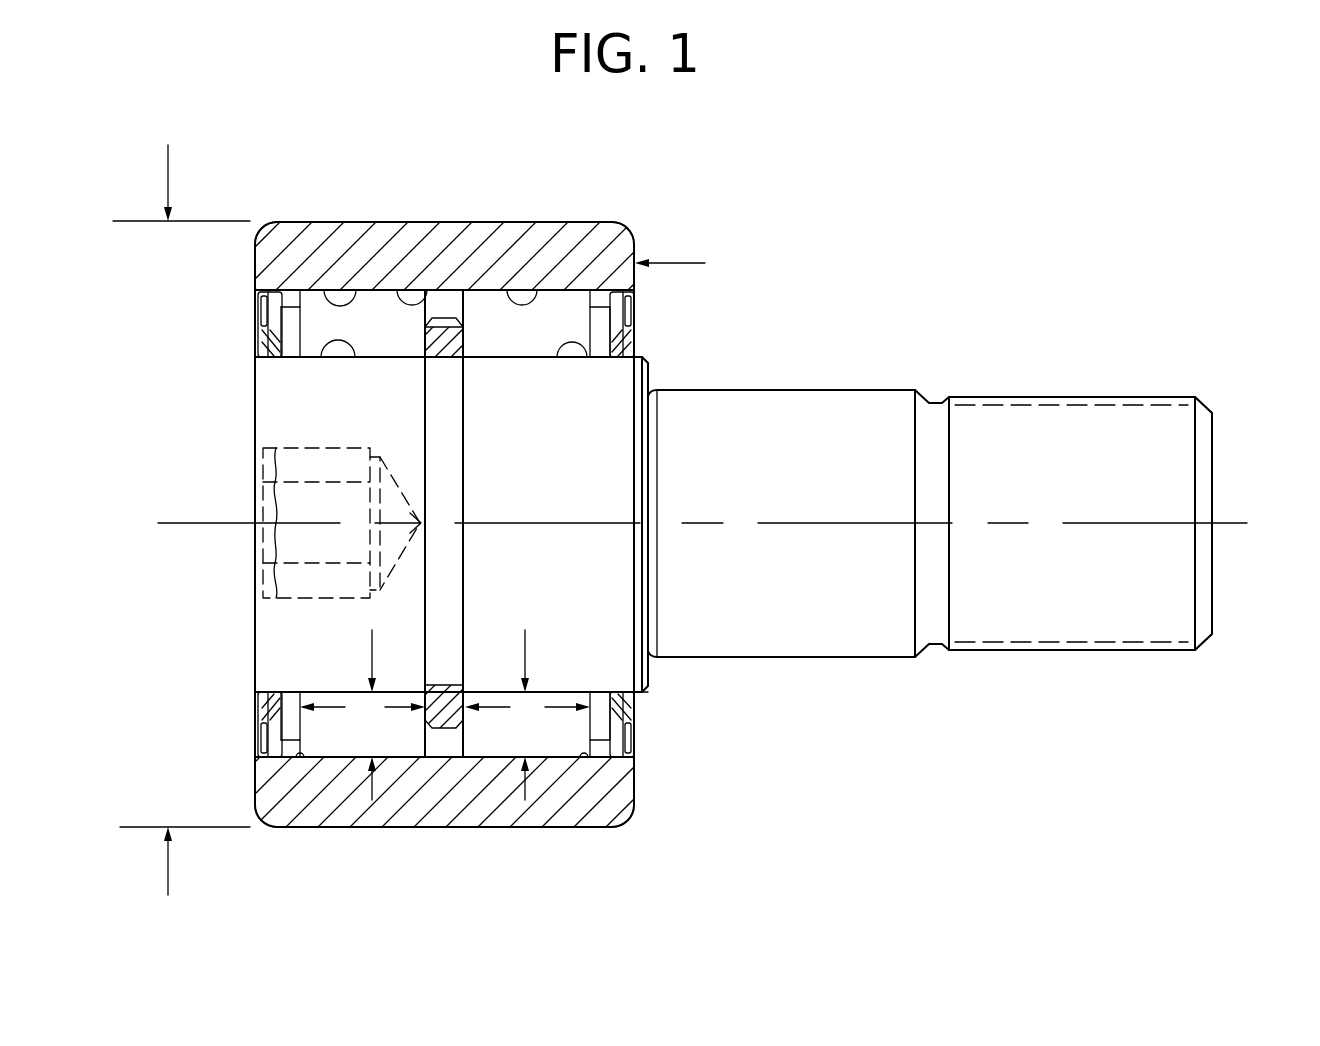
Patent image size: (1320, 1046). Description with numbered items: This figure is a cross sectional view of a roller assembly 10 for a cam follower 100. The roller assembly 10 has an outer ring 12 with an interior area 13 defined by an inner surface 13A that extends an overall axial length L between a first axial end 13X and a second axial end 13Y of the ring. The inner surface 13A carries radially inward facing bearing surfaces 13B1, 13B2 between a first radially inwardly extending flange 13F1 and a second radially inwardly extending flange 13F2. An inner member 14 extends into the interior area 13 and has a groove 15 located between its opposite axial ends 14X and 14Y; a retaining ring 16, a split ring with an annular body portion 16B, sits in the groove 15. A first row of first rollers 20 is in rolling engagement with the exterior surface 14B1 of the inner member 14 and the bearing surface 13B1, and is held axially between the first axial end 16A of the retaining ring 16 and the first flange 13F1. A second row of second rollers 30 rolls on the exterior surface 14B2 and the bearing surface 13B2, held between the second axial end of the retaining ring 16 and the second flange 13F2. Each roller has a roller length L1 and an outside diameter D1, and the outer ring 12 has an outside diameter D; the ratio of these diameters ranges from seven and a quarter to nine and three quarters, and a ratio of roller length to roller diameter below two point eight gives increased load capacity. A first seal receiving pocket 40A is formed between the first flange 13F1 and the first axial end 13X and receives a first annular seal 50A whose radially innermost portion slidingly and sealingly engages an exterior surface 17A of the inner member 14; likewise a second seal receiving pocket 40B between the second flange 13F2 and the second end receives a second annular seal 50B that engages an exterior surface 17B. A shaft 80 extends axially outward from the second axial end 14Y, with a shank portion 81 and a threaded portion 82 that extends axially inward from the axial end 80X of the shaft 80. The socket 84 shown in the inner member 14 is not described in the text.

The roller assembly 10 is at (245, 176).
The cam follower 100 is at (833, 188).
The outer ring 12 is at (508, 235).
The interior area 13 is at (446, 294).
The inner surface 13A is at (408, 292).
The radially inward facing bearing surface 13B1 is at (345, 302).
The radially inward facing bearing surface 13B2 is at (540, 300).
The first radially inwardly extending flange 13F1 is at (290, 276).
The second radially inwardly extending flange 13F2 is at (600, 278).
The first axial end 13X is at (255, 245).
The second axial end 13Y is at (628, 246).
The inner member 14 is at (285, 403).
The exterior surface 14B1 is at (346, 350).
The exterior surface 14B2 is at (575, 348).
The axial end 14X is at (257, 632).
The axial end 14Y is at (645, 357).
The groove 15 is at (442, 404).
The retaining ring 16 is at (445, 712).
The first axial end 16A is at (425, 720).
The annular body portion 16B is at (465, 720).
The exterior surface 17A is at (297, 692).
The exterior surface 17B is at (640, 697).
The first rollers 20 is at (340, 745).
The second rollers 30 is at (598, 822).
The first seal receiving pocket 40A is at (246, 313).
The second seal receiving pocket 40B is at (650, 300).
The first annular seal 50A is at (244, 352).
The second annular seal 50B is at (652, 330).
The shaft 80 is at (969, 523).
The axial end 80X is at (1242, 542).
The shank portion 81 is at (868, 388).
The threaded portion 82 is at (1040, 397).
The hexagonal socket 84 is at (298, 540).
The outside diameter D is at (170, 878).
The outside diameter D1 is at (372, 652).
The overall axial length L is at (683, 260).
The roller length L1 is at (335, 707).